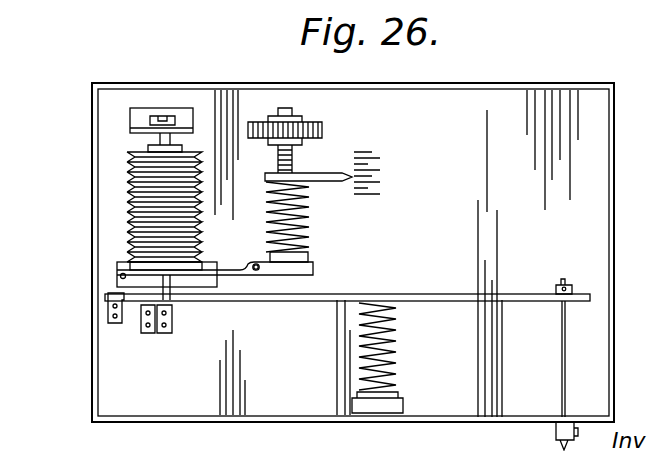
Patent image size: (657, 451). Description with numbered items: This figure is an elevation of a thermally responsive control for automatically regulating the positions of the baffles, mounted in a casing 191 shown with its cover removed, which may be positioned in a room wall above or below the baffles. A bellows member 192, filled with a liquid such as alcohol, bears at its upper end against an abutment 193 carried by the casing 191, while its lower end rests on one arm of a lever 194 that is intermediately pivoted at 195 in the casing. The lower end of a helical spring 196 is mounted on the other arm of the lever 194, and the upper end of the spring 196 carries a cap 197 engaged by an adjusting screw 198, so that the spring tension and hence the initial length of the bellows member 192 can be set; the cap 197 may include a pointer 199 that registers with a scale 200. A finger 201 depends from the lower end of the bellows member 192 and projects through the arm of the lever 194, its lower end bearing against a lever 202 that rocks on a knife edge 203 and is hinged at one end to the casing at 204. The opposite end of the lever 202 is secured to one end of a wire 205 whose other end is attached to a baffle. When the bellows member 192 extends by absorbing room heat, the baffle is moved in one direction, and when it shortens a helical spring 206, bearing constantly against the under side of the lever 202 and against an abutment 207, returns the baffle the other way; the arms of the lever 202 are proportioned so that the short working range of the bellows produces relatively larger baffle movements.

The casing 191 is at (513, 83).
The bellows member 192 is at (127, 195).
The abutment 193 is at (158, 135).
The lever 194 is at (226, 275).
The pivot 195 is at (256, 272).
The helical spring 196 is at (307, 246).
The cap 197 is at (265, 177).
The adjusting screw 198 is at (293, 158).
The pointer 199 is at (326, 182).
The scale 200 is at (380, 172).
The finger 201 is at (174, 292).
The lever 202 is at (319, 293).
The knife edge 203 is at (136, 300).
The hinge 204 is at (133, 293).
The wire 205 is at (562, 322).
The helical spring 206 is at (397, 342).
The abutment 207 is at (403, 405).